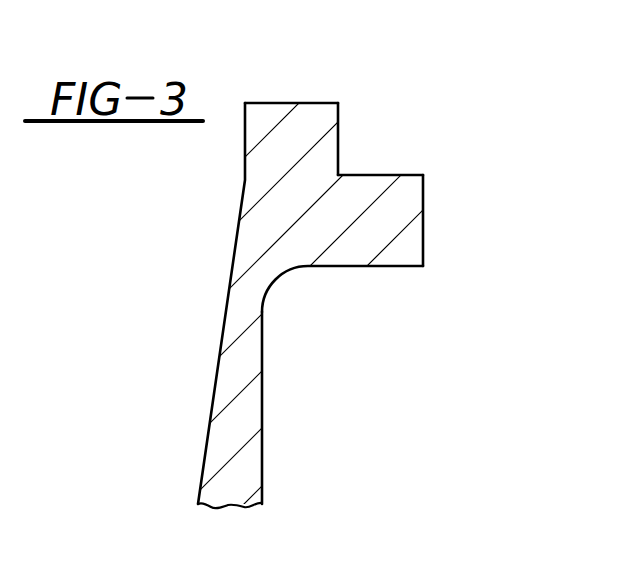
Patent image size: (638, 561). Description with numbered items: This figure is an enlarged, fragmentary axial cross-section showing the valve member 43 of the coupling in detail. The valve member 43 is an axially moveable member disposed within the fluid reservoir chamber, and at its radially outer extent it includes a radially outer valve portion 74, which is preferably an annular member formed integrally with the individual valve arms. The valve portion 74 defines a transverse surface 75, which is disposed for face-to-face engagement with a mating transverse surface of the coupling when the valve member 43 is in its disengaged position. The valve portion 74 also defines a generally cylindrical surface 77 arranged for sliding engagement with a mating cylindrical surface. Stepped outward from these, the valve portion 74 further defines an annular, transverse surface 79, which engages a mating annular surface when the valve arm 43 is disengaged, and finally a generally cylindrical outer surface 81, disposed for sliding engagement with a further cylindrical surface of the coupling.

The valve member 43 is at (252, 412).
The radially outer valve portion 74 is at (362, 250).
The transverse surface 75 is at (423, 207).
The generally cylindrical surface 77 is at (397, 175).
The annular transverse surface 79 is at (338, 135).
The generally cylindrical outer surface 81 is at (305, 103).